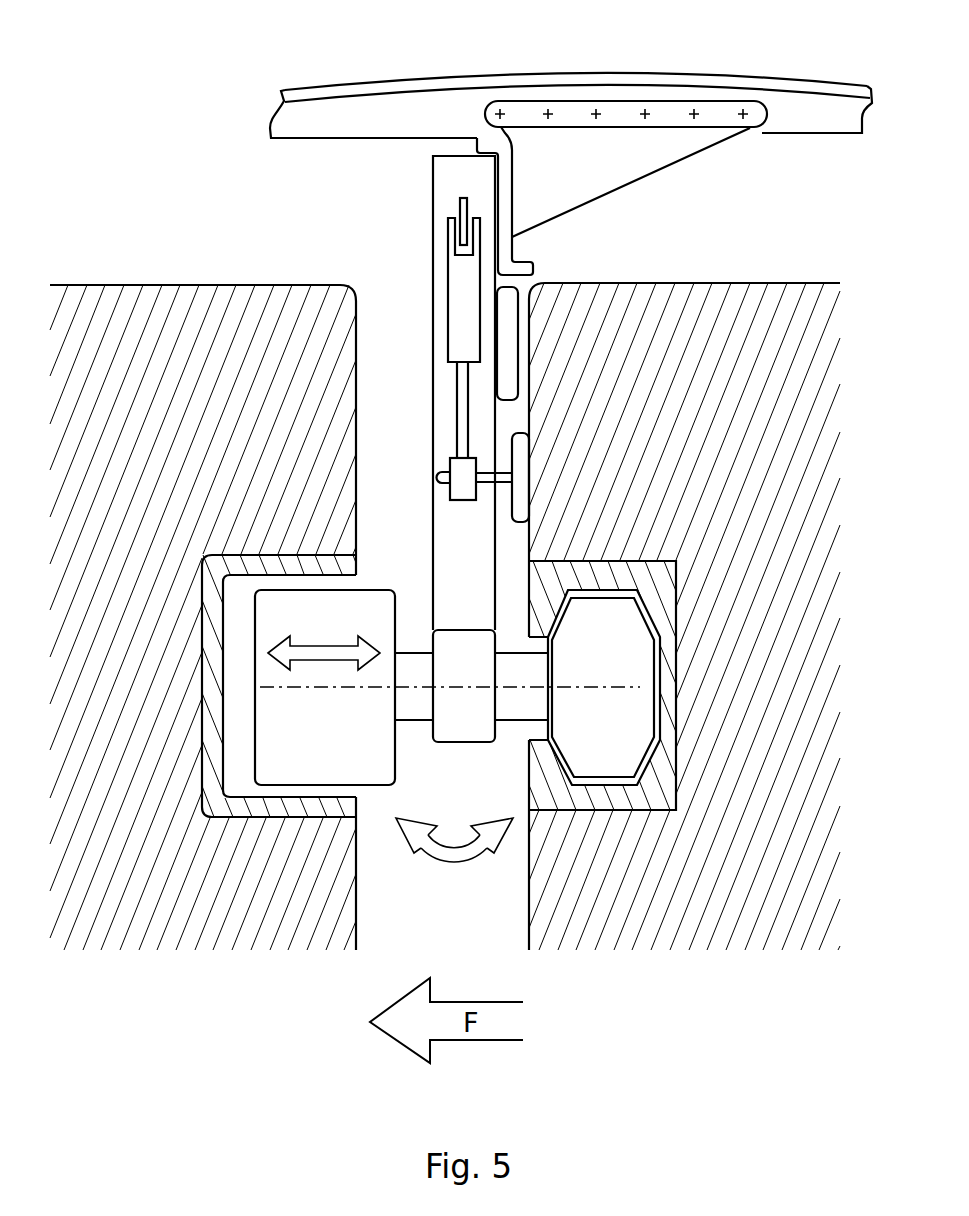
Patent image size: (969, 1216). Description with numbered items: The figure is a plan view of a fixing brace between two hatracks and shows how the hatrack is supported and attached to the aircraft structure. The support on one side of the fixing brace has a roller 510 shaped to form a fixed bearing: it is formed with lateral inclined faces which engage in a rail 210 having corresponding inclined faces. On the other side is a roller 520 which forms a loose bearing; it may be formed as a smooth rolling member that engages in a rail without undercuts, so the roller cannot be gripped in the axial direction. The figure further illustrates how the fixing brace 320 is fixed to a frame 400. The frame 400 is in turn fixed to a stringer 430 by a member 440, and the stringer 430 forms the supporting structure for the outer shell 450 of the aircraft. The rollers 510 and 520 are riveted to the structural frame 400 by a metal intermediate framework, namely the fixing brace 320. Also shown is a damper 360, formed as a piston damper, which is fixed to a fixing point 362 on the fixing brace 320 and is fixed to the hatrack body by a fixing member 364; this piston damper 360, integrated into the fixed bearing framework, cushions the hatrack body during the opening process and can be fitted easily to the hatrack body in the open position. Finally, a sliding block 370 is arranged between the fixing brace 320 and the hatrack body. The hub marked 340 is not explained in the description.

The rail 210 is at (657, 792).
The fixing brace 320 is at (474, 360).
The hub 340 is at (473, 720).
The damper 360 is at (457, 285).
The fixing point 362 is at (467, 213).
The fixing member 364 is at (505, 477).
The sliding block 370 is at (502, 340).
The frame 400 is at (505, 172).
The stringer 430 is at (821, 114).
The member 440 is at (670, 145).
The outer shell 450 is at (822, 84).
The roller 510 is at (620, 725).
The roller 520 is at (303, 742).